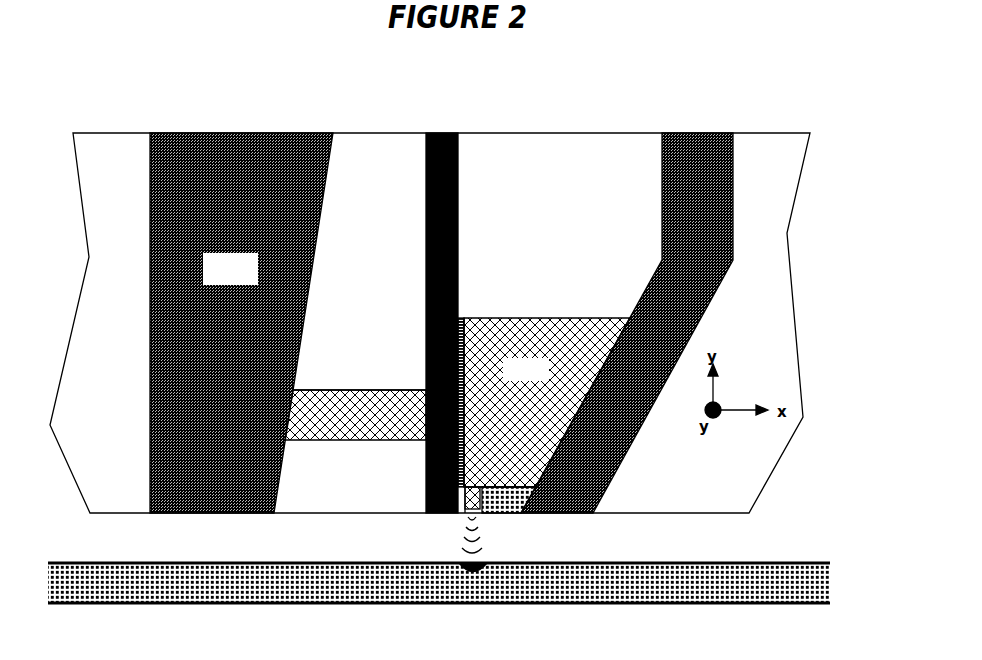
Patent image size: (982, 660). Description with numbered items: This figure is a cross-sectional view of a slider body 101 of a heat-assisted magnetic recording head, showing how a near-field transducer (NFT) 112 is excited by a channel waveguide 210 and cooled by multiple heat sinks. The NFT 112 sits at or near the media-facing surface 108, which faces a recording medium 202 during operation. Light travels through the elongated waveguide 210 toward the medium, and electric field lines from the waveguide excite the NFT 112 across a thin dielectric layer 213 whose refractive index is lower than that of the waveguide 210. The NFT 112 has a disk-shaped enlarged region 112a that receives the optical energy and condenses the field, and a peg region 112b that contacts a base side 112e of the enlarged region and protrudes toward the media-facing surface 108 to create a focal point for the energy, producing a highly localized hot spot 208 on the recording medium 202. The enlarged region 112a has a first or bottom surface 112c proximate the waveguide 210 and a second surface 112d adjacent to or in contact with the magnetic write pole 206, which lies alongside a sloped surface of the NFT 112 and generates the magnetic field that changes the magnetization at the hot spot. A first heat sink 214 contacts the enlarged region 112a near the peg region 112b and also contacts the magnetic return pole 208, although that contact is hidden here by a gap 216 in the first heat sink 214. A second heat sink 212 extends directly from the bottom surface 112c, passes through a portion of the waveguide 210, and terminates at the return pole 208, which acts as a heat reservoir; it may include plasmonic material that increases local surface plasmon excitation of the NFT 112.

The slider body 101 is at (643, 112).
The media-facing surface 108 is at (680, 513).
The near-field transducer 112 is at (555, 318).
The enlarged region 112a is at (526, 369).
The peg region 112b is at (468, 510).
The first surface 112c is at (465, 333).
The second surface 112d is at (565, 440).
The base side 112e is at (496, 487).
The recording medium 202 is at (642, 593).
The magnetic write pole 206 is at (688, 300).
The magnetic return pole 208 is at (422, 628).
The channel waveguide 210 is at (458, 227).
The second heat sink 212 is at (328, 440).
The dielectric layer 213 is at (463, 353).
The first heat sink 214 is at (503, 508).
The gap 216 is at (355, 424).